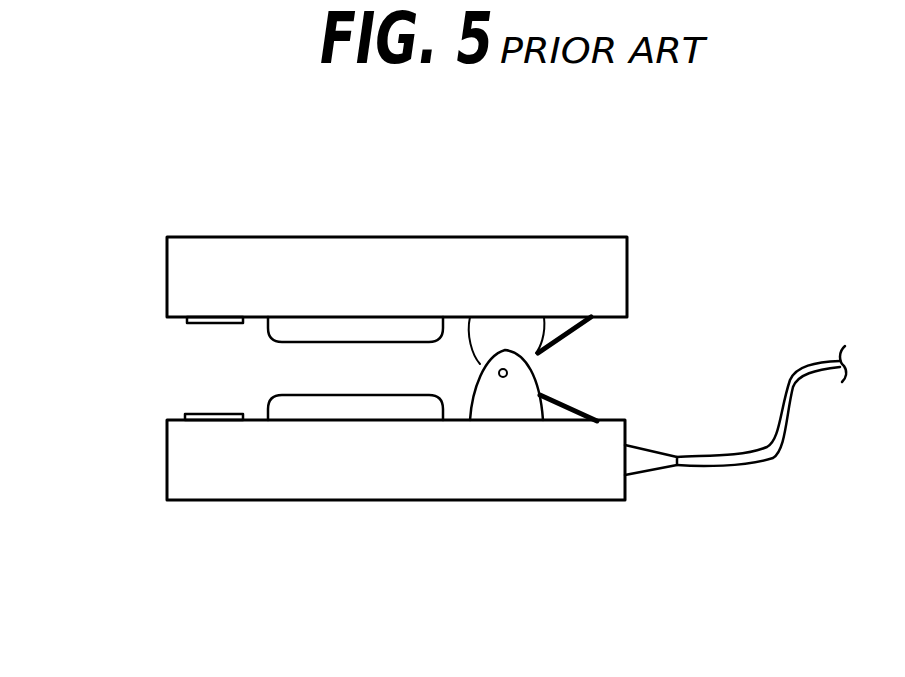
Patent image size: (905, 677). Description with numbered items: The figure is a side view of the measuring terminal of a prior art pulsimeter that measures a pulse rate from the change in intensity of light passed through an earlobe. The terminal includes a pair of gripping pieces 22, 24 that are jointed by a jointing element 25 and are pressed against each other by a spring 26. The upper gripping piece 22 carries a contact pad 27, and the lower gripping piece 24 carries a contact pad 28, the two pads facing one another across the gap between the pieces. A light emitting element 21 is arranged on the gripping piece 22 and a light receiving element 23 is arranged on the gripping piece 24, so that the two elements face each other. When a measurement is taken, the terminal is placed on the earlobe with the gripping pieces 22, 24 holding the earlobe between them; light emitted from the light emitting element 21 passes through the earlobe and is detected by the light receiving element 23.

The light emitting element 21 is at (210, 328).
The gripping piece 22 is at (383, 237).
The light receiving element 23 is at (207, 413).
The gripping piece 24 is at (377, 500).
The jointing element 25 is at (508, 415).
The spring 26 is at (578, 328).
The contact pad 27 is at (392, 320).
The contact pad 28 is at (357, 412).